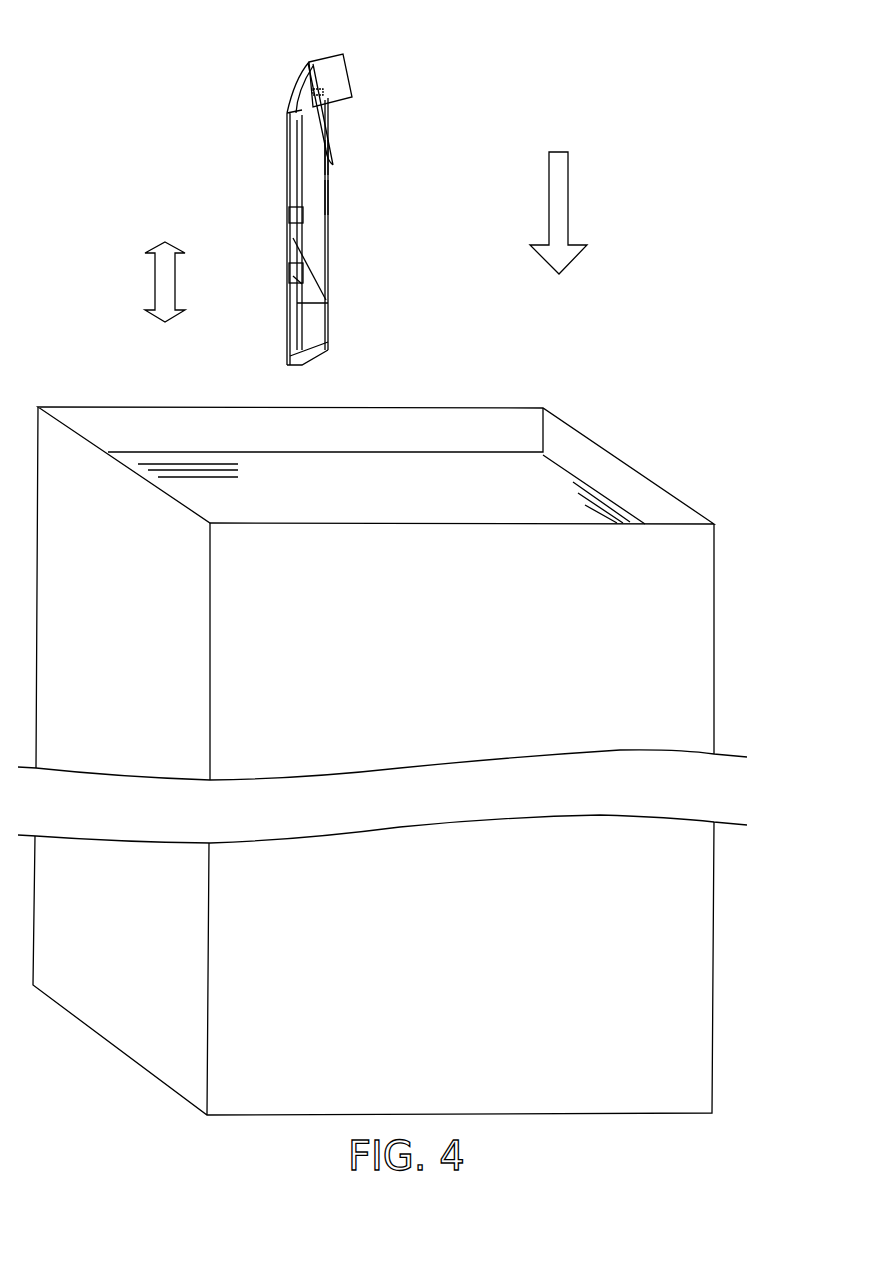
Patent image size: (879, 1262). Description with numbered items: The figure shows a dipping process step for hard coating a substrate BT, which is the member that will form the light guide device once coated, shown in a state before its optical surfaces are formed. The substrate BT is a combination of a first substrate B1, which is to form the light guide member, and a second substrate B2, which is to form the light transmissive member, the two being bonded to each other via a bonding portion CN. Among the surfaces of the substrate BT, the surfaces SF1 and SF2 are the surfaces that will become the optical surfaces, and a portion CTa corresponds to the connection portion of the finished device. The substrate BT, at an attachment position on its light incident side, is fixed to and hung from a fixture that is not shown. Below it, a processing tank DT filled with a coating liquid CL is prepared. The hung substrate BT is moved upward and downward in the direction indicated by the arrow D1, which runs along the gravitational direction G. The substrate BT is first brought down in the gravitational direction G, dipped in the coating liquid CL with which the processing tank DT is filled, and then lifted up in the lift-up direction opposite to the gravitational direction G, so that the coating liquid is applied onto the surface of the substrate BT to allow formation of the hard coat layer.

The substrate BT is at (347, 197).
The surface SF1 is at (329, 130).
The portion corresponding to the connection portion CTa is at (340, 162).
The surface SF2 is at (329, 197).
The first substrate B1 is at (394, 178).
The second substrate B2 is at (313, 321).
The bonding portion CN is at (295, 280).
The arrow D1 is at (157, 285).
The gravitational direction G is at (561, 196).
The coating liquid CL is at (548, 485).
The processing tank DT is at (693, 700).